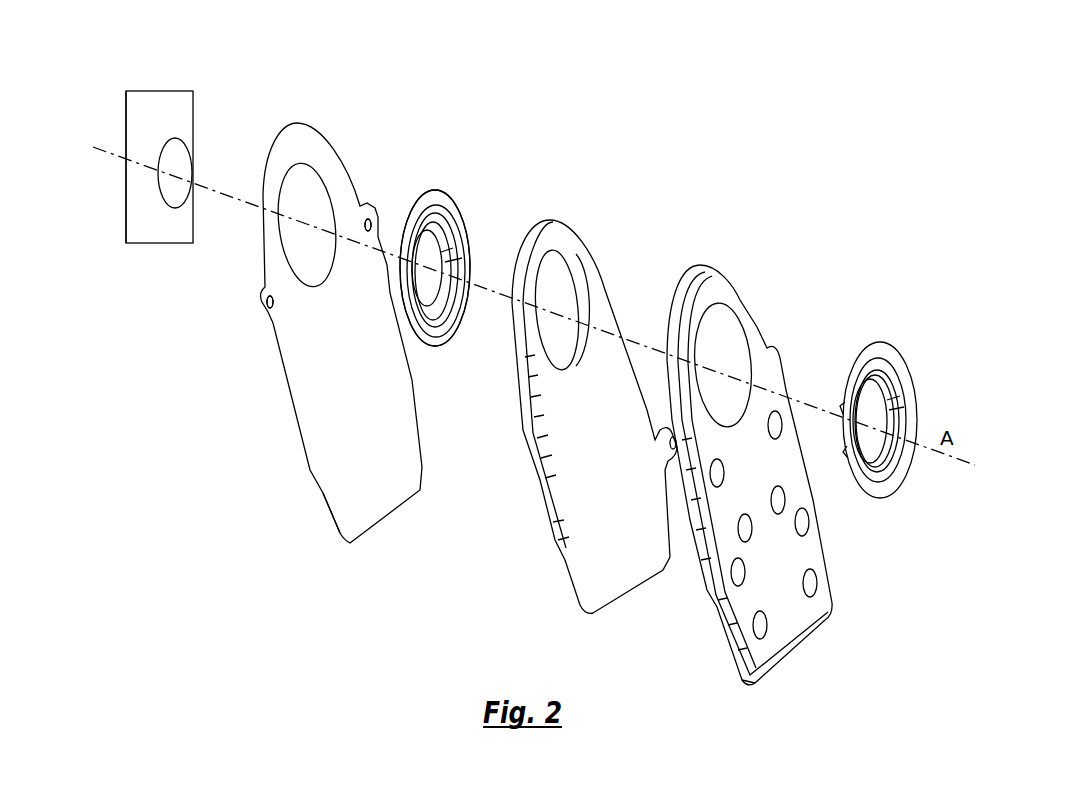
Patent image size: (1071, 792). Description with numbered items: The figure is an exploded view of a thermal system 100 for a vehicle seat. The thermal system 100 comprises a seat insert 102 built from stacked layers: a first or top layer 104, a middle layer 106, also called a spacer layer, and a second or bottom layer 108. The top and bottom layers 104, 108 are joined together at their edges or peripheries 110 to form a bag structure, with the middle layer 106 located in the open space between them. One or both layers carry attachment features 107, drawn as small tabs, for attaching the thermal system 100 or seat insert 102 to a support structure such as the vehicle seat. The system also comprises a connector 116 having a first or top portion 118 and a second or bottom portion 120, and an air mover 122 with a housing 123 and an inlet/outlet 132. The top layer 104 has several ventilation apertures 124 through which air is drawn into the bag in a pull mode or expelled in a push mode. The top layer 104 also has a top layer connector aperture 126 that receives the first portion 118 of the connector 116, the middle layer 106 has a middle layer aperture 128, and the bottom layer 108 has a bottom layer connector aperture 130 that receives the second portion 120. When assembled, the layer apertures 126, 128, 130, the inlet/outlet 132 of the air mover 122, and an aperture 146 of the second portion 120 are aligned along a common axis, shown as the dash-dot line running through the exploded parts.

The thermal system 100 is at (250, 48).
The seat insert 102 is at (604, 108).
The top layer 104 is at (737, 280).
The middle layer 106 is at (565, 215).
The attachment features 107 is at (362, 206).
The bottom layer 108 is at (305, 113).
The edges or peripheries 110 is at (322, 498).
The connector 116 is at (682, 156).
The first portion of the connector 118 is at (880, 338).
The second portion of the connector 120 is at (434, 185).
The air mover 122 is at (162, 246).
The housing 123 is at (133, 122).
The ventilation apertures 124 is at (745, 530).
The top layer connector aperture 126 is at (722, 357).
The middle layer aperture 128 is at (560, 292).
The bottom layer connector aperture 130 is at (313, 198).
The inlet/outlet 132 is at (176, 156).
The aperture of the second portion 146 is at (422, 252).